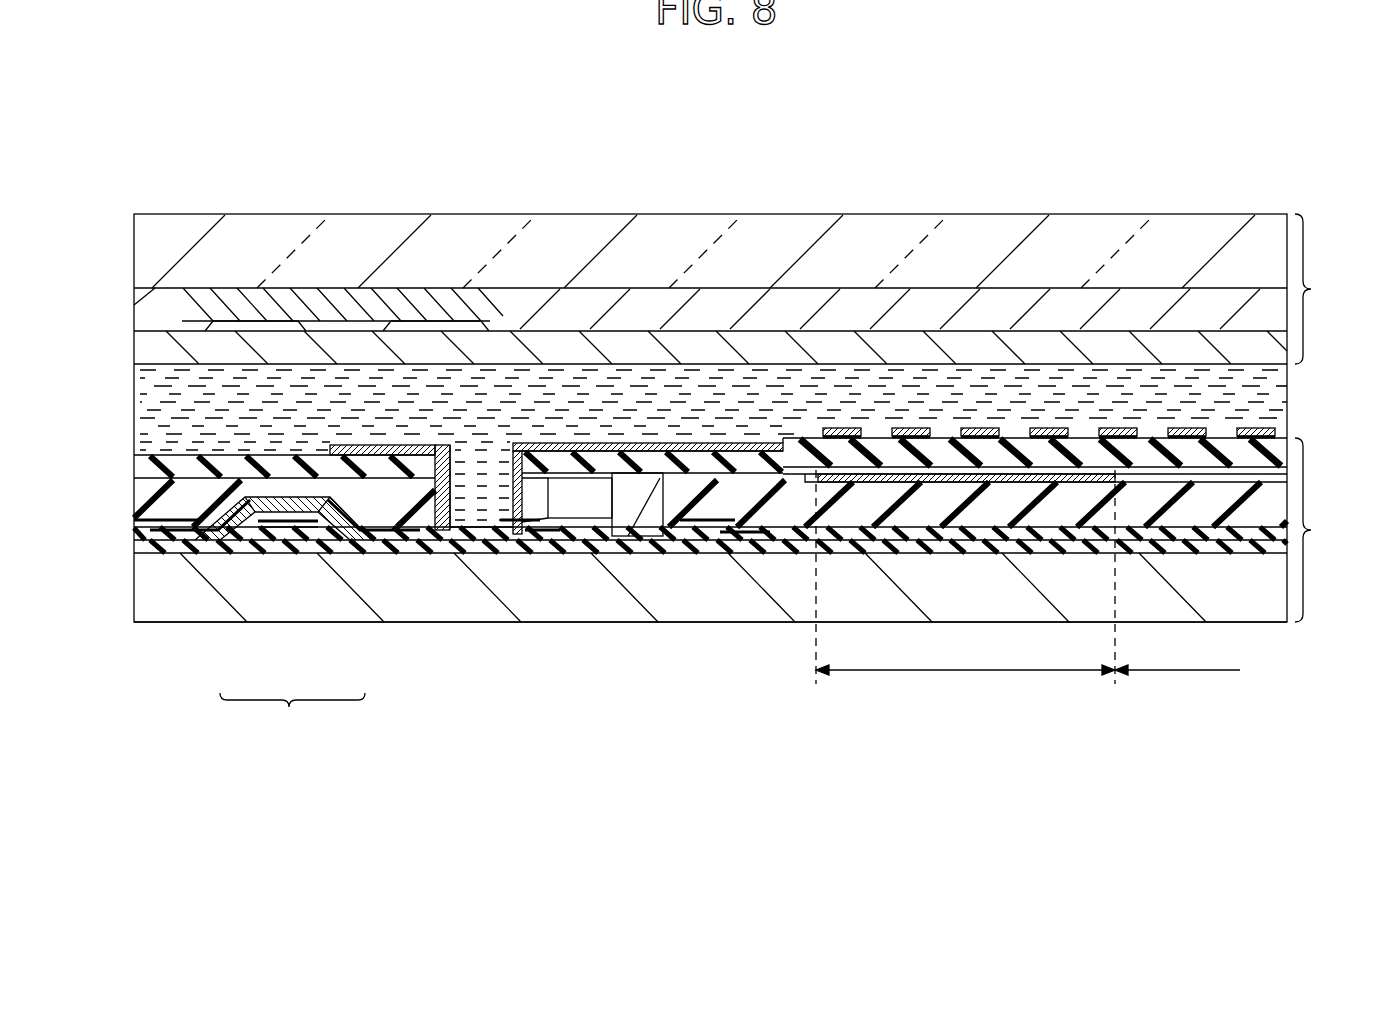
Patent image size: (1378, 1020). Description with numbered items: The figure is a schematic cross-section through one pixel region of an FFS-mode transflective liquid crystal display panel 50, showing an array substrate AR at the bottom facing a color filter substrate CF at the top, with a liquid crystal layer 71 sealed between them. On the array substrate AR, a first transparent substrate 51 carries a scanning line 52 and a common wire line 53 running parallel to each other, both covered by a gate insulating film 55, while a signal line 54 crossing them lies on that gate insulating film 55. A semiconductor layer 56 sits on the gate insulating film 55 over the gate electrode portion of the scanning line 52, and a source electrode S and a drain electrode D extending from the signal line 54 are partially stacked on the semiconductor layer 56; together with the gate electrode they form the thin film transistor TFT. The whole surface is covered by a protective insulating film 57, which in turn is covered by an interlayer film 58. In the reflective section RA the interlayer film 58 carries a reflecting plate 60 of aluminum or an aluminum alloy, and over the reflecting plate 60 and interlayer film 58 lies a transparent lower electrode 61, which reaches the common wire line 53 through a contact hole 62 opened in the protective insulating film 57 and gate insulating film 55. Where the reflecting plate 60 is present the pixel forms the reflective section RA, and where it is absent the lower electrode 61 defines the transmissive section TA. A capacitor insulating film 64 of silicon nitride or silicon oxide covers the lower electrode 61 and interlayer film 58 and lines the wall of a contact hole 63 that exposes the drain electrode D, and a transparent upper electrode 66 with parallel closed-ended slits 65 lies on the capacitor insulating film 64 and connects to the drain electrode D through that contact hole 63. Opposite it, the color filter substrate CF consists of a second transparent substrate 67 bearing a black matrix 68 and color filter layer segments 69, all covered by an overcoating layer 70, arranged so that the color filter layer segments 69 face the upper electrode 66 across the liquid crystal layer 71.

The FFS-mode transflective liquid crystal display panel 50 is at (206, 145).
The first transparent substrate 51 is at (160, 585).
The scanning line 52 is at (290, 540).
The common wire line 53 is at (640, 540).
The signal line 54 is at (180, 540).
The gate insulating film 55 is at (533, 530).
The semiconductor layer 56 is at (282, 493).
The protective insulating film 57 is at (417, 530).
The interlayer film 58 is at (162, 493).
The reflecting plate 60 is at (938, 474).
The lower electrode 61 is at (700, 557).
The contact hole 62 is at (618, 500).
The contact hole 63 is at (447, 470).
The capacitor insulating film 64 is at (220, 473).
The slit 65 is at (1150, 436).
The upper electrode 66 is at (728, 446).
The second transparent substrate 67 is at (893, 250).
The black matrix 68 is at (362, 310).
The color filter layer segment 69 is at (1065, 310).
The overcoating layer 70 is at (1190, 350).
The liquid crystal layer 71 is at (185, 396).
The source electrode S is at (232, 540).
The drain electrode D is at (350, 540).
The thin film transistor TFT is at (292, 723).
The color filter substrate CF is at (1325, 289).
The array substrate AR is at (1326, 530).
The reflective section RA is at (965, 577).
The transmissive section TA is at (1177, 655).